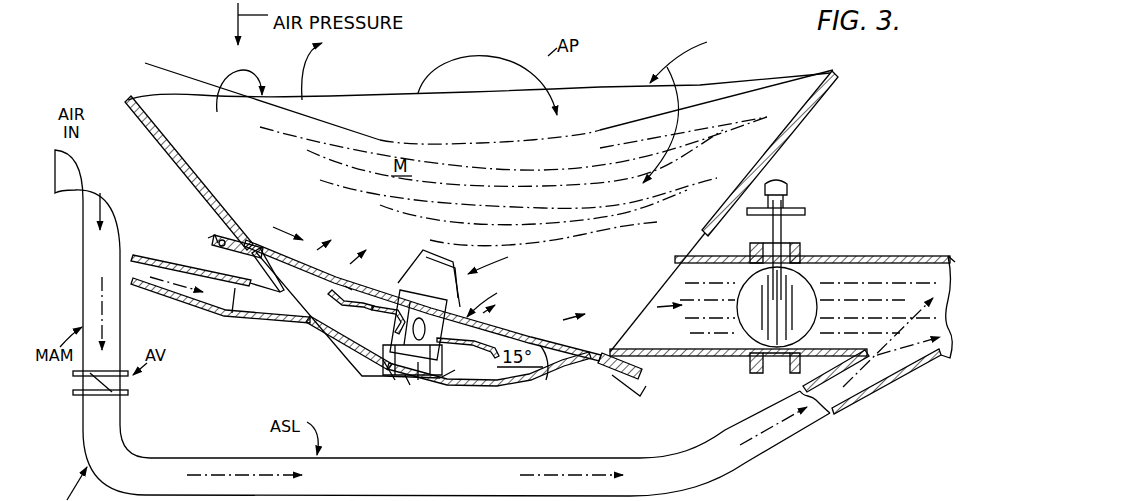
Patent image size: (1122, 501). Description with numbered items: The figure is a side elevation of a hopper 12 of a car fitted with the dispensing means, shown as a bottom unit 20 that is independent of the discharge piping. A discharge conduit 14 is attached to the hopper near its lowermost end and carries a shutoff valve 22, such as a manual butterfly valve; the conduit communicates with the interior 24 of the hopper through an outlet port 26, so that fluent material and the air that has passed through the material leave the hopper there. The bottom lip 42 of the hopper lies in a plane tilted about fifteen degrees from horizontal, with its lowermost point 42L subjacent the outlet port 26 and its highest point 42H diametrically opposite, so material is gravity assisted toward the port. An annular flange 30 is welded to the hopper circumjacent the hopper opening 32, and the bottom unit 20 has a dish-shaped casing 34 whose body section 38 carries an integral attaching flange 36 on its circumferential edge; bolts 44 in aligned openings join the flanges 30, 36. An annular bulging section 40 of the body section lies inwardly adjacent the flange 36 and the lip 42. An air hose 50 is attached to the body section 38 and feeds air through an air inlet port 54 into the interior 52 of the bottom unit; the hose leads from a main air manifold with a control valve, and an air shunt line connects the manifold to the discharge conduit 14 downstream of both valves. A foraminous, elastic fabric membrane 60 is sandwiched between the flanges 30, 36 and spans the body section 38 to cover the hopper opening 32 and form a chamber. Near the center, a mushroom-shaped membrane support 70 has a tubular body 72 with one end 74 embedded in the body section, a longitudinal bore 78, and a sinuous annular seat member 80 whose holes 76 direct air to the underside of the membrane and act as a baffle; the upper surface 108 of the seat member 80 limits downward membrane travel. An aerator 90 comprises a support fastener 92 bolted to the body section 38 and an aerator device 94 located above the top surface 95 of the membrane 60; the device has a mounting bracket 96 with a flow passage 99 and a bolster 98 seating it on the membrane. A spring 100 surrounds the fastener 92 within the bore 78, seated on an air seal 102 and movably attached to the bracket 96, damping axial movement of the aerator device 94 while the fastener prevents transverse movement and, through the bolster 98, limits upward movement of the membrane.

The hopper 12 is at (170, 158).
The discharge conduit 14 is at (833, 250).
The bottom unit 20 is at (307, 338).
The shutoff valve 22 is at (797, 173).
The interior of the hopper 24 is at (520, 121).
The outlet port 26 is at (665, 273).
The annular flange 30 is at (213, 234).
The hopper opening 32 is at (333, 278).
The dish-shaped casing 34 is at (333, 357).
The attaching flange 36 is at (206, 260).
The body section 38 is at (350, 361).
The annular bulging section 40 is at (240, 290).
The lip of the hopper 42 is at (257, 245).
The highest point of the lip 42H is at (253, 243).
The lowermost point of the lip 42L is at (584, 377).
The bolts 44 is at (221, 240).
The air hose 50 is at (254, 322).
The interior of the bottom unit 52 is at (480, 364).
The air inlet port 54 is at (290, 297).
The foraminous membrane 60 is at (351, 284).
The membrane support 70 is at (493, 296).
The tubular body 72 is at (379, 334).
The end of the tubular body 74 is at (407, 378).
The holes 76 is at (394, 307).
The bore 78 is at (415, 383).
The annular seat member 80 is at (515, 348).
The aerator 90 is at (500, 261).
The support fastener 92 is at (410, 385).
The aerator device 94 is at (453, 262).
The top surface of the membrane 95 is at (548, 364).
The mounting bracket 96 is at (455, 305).
The bolster 98 is at (372, 288).
The flow passage 99 is at (423, 317).
The spring 100 is at (453, 379).
The air seal 102 is at (384, 380).
The upper surface of the seat member 108 is at (343, 294).